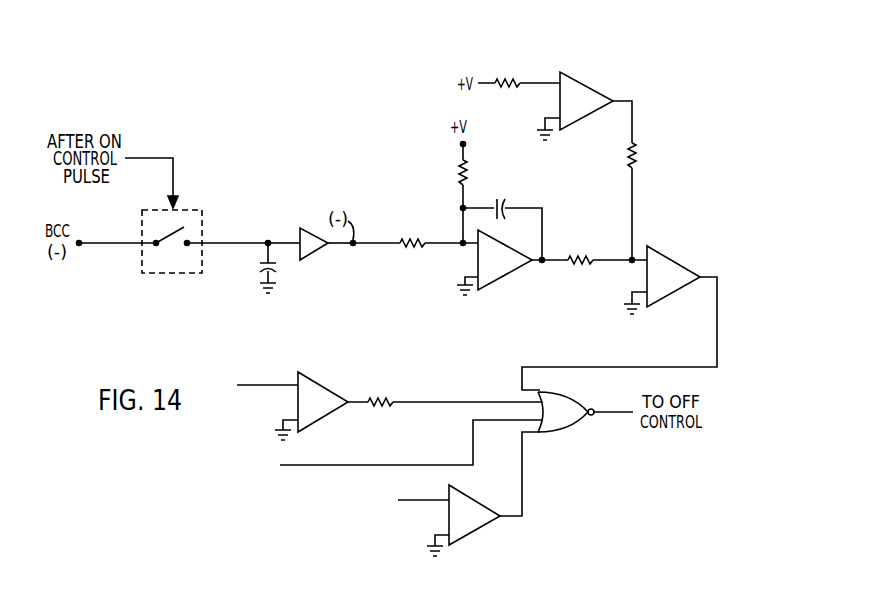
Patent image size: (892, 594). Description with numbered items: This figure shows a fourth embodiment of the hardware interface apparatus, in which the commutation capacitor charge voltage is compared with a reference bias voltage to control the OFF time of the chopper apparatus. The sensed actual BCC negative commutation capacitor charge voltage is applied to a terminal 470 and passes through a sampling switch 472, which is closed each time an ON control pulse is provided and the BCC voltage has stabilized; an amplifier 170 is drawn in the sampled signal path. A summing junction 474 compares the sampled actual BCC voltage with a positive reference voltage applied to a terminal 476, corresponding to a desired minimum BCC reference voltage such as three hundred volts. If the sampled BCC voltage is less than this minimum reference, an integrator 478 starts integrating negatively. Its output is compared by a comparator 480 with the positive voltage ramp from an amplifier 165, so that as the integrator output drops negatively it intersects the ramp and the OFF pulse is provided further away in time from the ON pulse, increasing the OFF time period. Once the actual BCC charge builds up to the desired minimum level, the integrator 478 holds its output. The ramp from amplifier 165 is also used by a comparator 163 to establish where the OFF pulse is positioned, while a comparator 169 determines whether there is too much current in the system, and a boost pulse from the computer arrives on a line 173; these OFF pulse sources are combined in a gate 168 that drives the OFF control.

The terminal 470 is at (83, 246).
The sampling switch 472 is at (177, 277).
The amplifier 170 is at (312, 256).
The summing junction 474 is at (460, 252).
The terminal 476 is at (466, 146).
The integrator 478 is at (495, 283).
The comparator 480 is at (670, 254).
The amplifier 165 is at (588, 83).
The comparator 163 is at (322, 380).
The NOR gate 168 is at (568, 396).
The comparator 169 is at (483, 529).
The line 173 is at (313, 468).